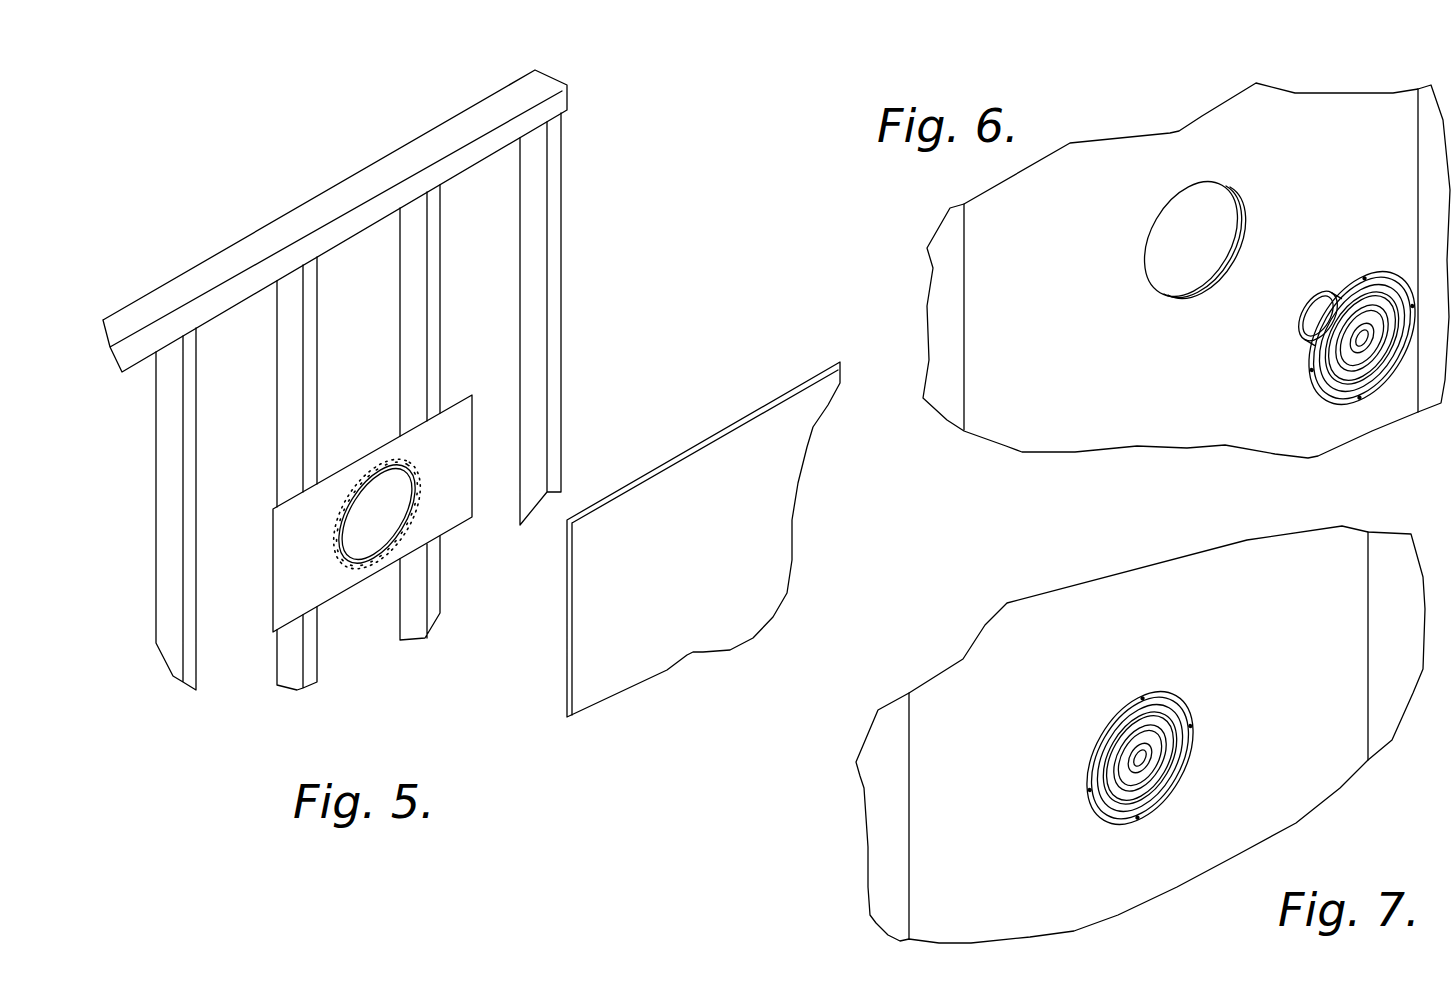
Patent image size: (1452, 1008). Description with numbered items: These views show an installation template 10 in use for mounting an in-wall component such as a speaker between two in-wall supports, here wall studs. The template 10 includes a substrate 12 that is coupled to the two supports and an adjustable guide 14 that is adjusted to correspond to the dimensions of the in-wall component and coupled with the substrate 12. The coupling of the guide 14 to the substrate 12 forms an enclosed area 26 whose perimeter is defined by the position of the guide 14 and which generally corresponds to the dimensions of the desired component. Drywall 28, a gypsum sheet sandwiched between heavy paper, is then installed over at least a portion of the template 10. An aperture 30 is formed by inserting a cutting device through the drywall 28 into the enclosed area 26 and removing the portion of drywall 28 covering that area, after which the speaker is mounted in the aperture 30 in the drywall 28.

In FIG. 5, the installation template 10 is at (355, 624).
In FIG. 5, the substrate 12 is at (452, 522).
In FIG. 5, the adjustable guide 14 is at (413, 486).
In FIG. 5, the enclosed area 26 is at (381, 487).
In FIG. 5, the drywall 28 is at (582, 640).
In FIG. 6, the drywall 28 is at (1121, 435).
In FIG. 7, the drywall 28 is at (1116, 881).
In FIG. 6, the aperture 30 is at (1188, 231).